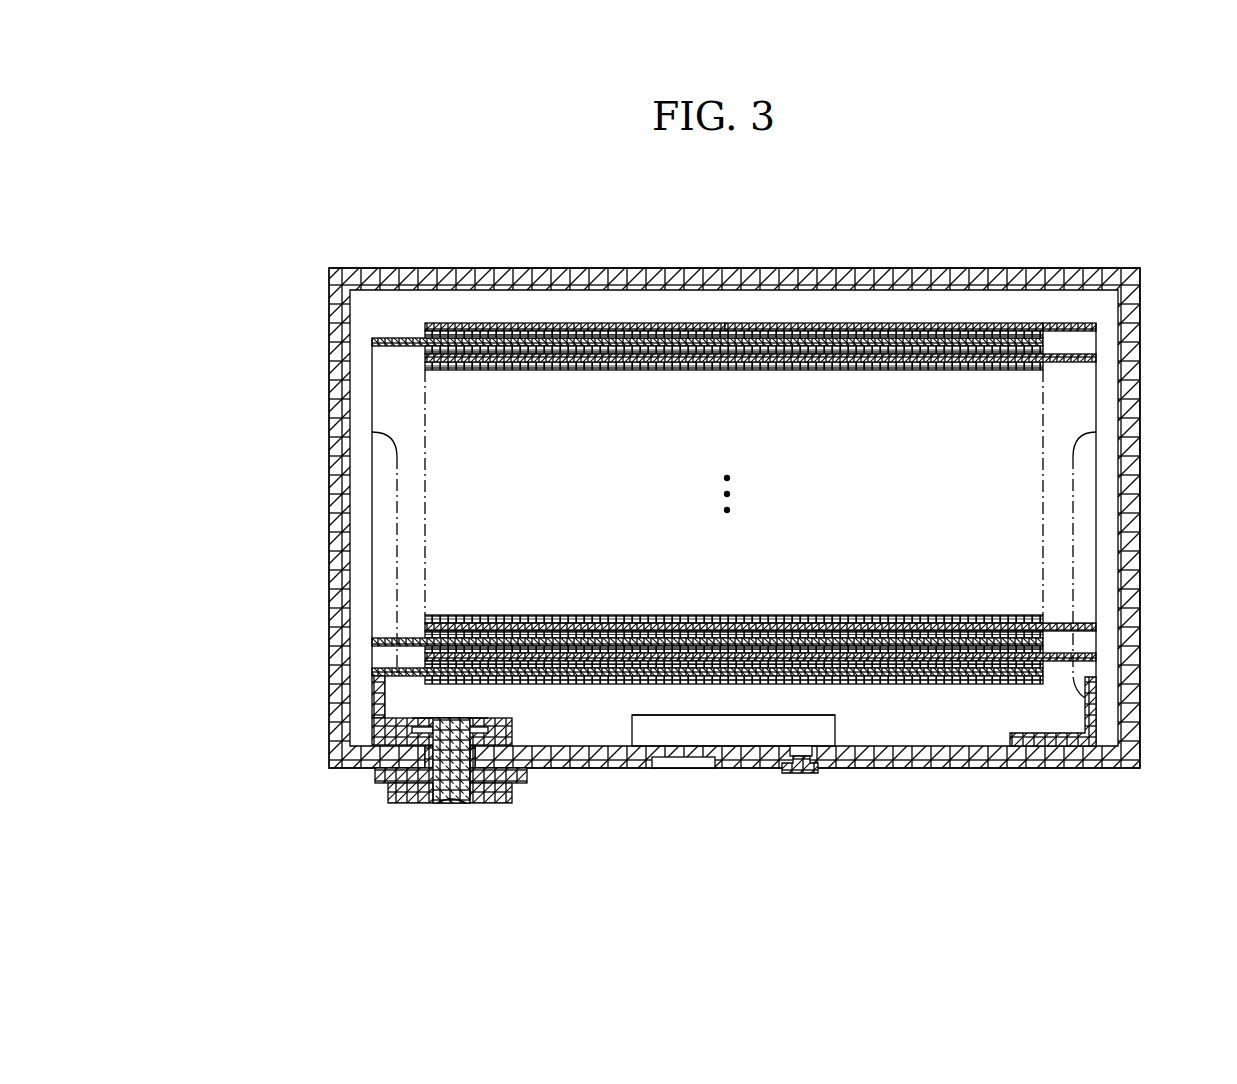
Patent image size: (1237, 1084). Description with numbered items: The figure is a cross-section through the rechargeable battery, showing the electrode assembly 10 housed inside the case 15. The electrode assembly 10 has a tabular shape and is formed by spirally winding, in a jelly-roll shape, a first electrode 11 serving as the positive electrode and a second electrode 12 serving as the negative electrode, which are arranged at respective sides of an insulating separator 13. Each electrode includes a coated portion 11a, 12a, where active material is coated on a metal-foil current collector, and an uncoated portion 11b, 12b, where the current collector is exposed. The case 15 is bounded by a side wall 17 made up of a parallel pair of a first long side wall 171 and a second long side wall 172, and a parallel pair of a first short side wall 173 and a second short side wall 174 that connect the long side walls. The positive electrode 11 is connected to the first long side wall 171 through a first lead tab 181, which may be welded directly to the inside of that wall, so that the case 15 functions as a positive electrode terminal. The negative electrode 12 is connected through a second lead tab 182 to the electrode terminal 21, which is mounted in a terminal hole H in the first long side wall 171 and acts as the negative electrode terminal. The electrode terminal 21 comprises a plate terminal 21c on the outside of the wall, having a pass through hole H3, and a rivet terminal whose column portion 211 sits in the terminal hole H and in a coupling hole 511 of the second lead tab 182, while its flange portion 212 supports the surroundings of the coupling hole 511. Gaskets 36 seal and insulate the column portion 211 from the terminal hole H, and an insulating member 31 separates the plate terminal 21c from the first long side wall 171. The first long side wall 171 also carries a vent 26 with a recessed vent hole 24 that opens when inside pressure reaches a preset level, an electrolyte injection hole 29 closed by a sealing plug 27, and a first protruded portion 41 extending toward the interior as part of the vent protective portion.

The electrode assembly 10 is at (734, 271).
The first electrode 11 is at (910, 251).
The coated portion 11a is at (942, 325).
The uncoated portion 11b is at (1069, 273).
The second electrode 12 is at (707, 259).
The coated portion 12a is at (517, 335).
The uncoated portion 12b is at (535, 215).
The separator 13 is at (728, 335).
The case 15 is at (1157, 528).
The side wall 17 is at (704, 523).
The first long side wall 171 is at (942, 755).
The second long side wall 172 is at (825, 280).
The first short side wall 173 is at (1130, 432).
The second short side wall 174 is at (338, 488).
The first lead tab 181 is at (1092, 700).
The second lead tab 182 is at (385, 693).
The electrode terminal 21 is at (468, 807).
The plate terminal 21c is at (502, 797).
The column portion 211 is at (410, 790).
The flange portion 212 is at (420, 728).
The vent hole 24 is at (698, 770).
The vent 26 is at (672, 752).
The sealing plug 27 is at (797, 770).
The electrolyte injection hole 29 is at (813, 750).
The insulating member 31 is at (523, 773).
The gasket 36 is at (450, 763).
The first protruded portion 41 is at (733, 799).
The coupling hole 511 is at (443, 716).
The terminal hole H is at (462, 775).
The pass through hole H3 is at (447, 803).